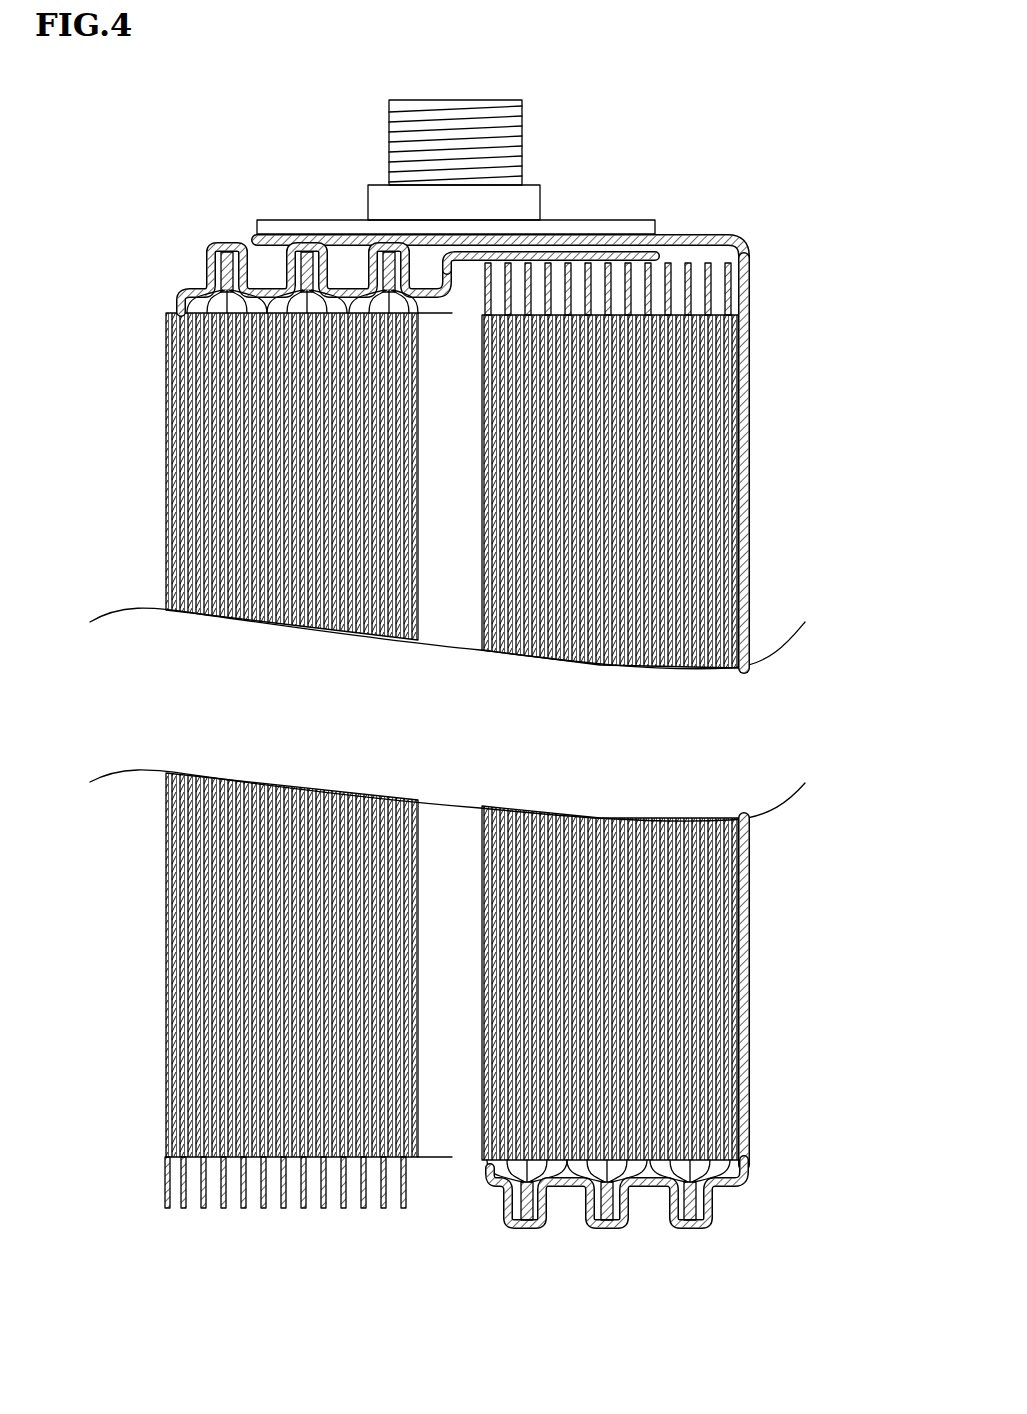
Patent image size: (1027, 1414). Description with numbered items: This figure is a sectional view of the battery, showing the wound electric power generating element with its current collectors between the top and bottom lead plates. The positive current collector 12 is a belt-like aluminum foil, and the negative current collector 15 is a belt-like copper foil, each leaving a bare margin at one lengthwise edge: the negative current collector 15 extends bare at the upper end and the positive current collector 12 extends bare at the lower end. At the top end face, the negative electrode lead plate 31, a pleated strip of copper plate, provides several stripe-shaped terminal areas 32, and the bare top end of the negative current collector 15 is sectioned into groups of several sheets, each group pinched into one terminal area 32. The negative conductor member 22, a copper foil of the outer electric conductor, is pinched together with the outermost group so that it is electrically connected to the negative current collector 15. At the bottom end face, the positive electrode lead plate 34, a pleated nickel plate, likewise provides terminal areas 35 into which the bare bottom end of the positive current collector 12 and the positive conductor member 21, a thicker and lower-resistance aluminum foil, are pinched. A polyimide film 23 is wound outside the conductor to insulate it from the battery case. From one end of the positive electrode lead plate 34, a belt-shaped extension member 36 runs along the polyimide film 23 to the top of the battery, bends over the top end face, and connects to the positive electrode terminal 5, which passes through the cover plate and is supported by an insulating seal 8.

The positive electrode terminal 5 is at (485, 106).
The insulating seal 8 is at (538, 200).
The positive current collector 12 is at (183, 1212).
The negative current collector 15 is at (200, 298).
The positive conductor member 21 is at (167, 1192).
The negative conductor member 22 is at (182, 305).
The polyimide film 23 is at (166, 1131).
The negative electrode lead plate 31 is at (580, 255).
The terminal areas 32 is at (230, 252).
The positive electrode lead plate 34 is at (752, 420).
The terminal areas 35 is at (530, 1222).
The extension member 36 is at (678, 240).